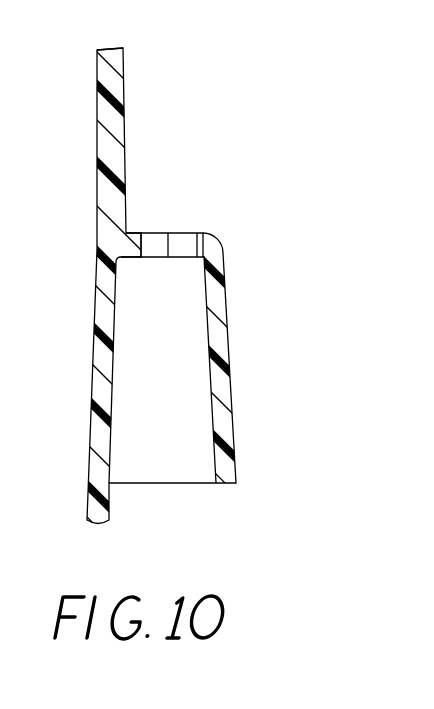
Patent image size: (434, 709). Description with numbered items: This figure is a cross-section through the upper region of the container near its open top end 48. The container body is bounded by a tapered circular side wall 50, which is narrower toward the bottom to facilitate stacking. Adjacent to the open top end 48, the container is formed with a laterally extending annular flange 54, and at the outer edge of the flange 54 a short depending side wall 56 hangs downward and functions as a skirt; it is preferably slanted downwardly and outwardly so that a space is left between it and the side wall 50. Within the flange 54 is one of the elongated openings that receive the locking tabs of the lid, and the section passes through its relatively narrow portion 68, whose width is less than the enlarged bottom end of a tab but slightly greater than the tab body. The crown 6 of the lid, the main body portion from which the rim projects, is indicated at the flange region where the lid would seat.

The open top end 48 is at (113, 48).
The circular side wall 50 is at (99, 160).
The crown 6 is at (141, 255).
The annular flange 54 is at (168, 255).
The narrow portion 68 is at (195, 247).
The depending side wall 56 is at (231, 372).